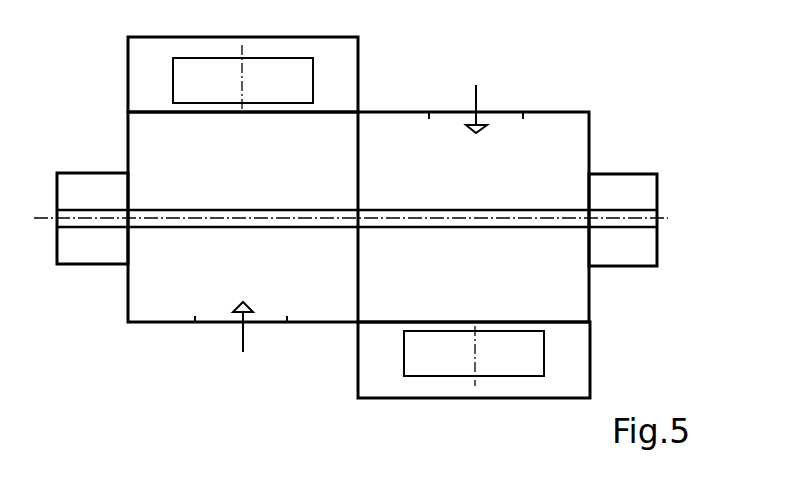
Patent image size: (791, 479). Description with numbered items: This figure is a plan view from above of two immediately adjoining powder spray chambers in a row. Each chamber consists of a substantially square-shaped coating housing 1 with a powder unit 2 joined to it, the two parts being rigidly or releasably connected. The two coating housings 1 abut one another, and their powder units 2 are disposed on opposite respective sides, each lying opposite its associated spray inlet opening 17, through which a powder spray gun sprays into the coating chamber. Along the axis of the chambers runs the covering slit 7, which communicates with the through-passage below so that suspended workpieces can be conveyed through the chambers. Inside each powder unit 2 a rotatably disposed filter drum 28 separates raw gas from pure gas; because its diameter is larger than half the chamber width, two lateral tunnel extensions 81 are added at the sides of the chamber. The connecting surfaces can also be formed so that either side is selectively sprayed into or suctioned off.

The coating housing 1 is at (599, 104).
The powder unit 2 is at (366, 32).
The covering slit 7 is at (283, 209).
The spray inlet opening 17 is at (496, 90).
The filter drum 28 is at (324, 92).
The lateral tunnel extensions 81 is at (74, 260).